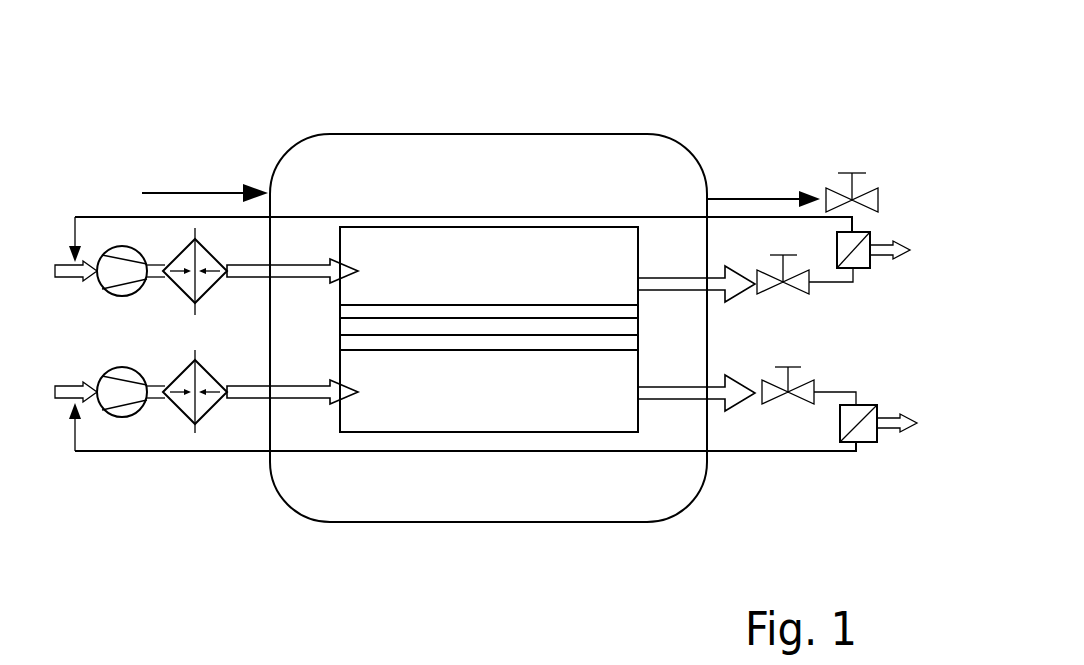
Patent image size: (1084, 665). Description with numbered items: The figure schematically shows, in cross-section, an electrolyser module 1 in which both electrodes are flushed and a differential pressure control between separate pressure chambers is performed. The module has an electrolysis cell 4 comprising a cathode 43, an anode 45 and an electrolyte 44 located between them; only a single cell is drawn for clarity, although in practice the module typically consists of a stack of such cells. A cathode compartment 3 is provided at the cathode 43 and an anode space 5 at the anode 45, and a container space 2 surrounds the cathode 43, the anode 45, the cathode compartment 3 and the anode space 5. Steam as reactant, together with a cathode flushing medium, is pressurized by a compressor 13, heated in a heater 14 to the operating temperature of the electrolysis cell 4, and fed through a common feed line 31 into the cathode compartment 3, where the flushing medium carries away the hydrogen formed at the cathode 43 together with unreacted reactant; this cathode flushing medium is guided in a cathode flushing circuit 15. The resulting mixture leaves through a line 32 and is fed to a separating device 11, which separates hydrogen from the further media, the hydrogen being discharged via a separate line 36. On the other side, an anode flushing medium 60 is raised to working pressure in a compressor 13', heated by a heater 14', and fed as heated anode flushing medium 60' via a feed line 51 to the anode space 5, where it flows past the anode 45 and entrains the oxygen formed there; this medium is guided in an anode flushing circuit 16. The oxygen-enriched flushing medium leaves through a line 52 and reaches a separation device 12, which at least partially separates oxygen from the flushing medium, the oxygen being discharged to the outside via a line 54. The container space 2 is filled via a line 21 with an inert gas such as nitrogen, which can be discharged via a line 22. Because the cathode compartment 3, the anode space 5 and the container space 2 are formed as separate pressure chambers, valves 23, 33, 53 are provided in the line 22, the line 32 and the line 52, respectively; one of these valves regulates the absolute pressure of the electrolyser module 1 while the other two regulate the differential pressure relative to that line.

The electrolyser module 1 is at (752, 95).
The container space 2 is at (420, 148).
The cathode compartment 3 is at (458, 242).
The electrolysis cell 4 is at (493, 340).
The anode space 5 is at (545, 403).
The separating device 11 is at (871, 231).
The separation device 12 is at (877, 408).
The compressor 13 is at (140, 258).
The compressor 13' is at (113, 432).
The heater 14 is at (187, 294).
The heater 14' is at (186, 423).
The cathode flushing circuit 15 is at (575, 217).
The anode flushing circuit 16 is at (667, 455).
The line 21 is at (192, 192).
The line 22 is at (797, 190).
The valve 23 is at (863, 190).
The feed line 31 is at (248, 280).
The line 32 is at (733, 291).
The valve 33 is at (808, 295).
The separate line 36 is at (897, 242).
The cathode 43 is at (358, 312).
The electrolyte 44 is at (430, 327).
The anode 45 is at (495, 347).
The feed line 51 is at (250, 400).
The line 52 is at (736, 401).
The valve 53 is at (817, 386).
The line 54 is at (893, 432).
The anode flushing medium 60 is at (71, 457).
The anode flushing medium 60' is at (264, 473).